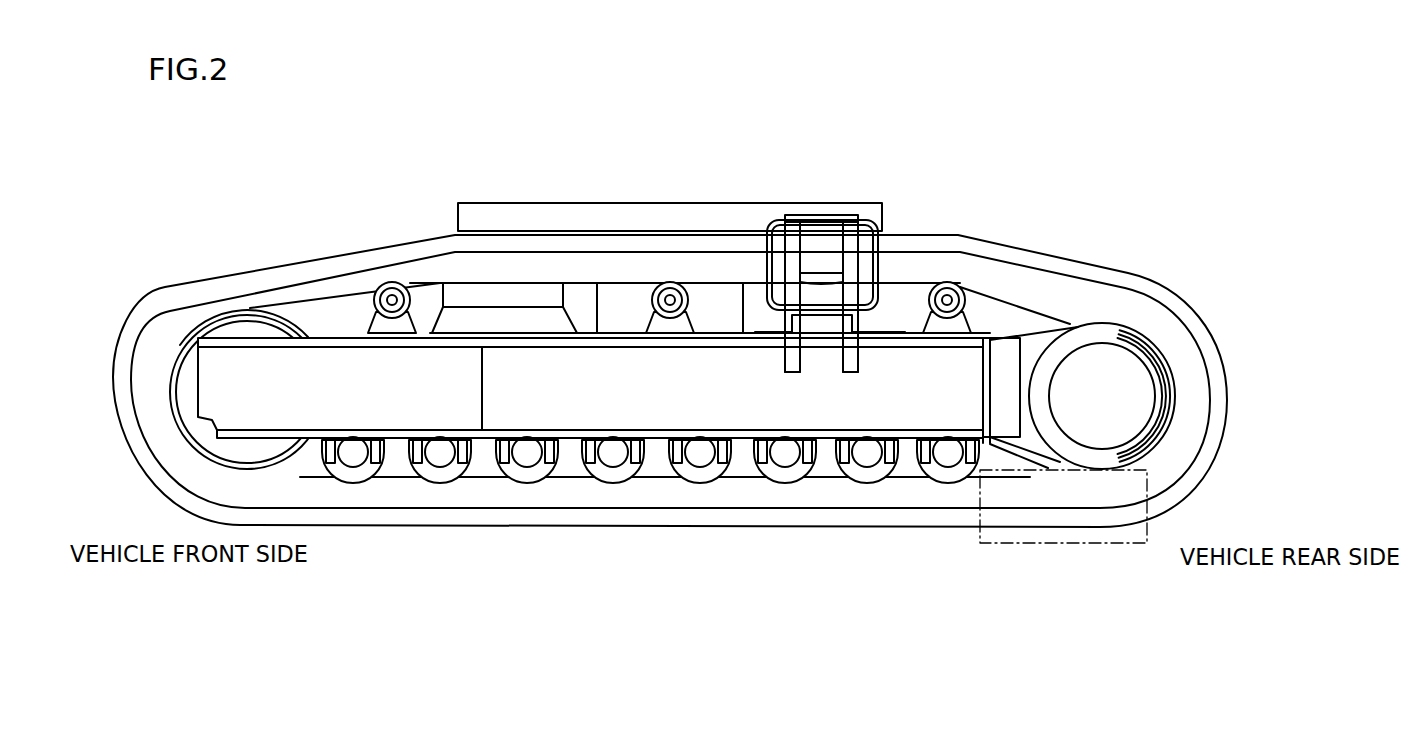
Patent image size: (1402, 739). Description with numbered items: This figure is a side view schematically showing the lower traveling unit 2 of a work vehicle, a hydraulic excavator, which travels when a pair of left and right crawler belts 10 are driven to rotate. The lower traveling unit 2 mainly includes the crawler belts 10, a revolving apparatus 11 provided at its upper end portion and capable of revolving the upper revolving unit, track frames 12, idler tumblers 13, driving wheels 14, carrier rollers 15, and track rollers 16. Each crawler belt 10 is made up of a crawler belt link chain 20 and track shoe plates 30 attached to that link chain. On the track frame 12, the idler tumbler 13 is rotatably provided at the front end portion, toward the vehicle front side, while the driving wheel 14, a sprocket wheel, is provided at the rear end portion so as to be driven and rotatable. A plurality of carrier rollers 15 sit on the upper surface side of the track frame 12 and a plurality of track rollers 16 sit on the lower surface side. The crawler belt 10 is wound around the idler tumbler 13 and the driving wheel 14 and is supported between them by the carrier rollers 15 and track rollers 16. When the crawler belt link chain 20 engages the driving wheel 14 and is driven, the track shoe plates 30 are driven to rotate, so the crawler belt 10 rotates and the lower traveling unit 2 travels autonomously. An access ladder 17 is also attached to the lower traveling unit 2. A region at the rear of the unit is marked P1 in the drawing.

The lower traveling unit 2 is at (670, 329).
The crawler belt 10 is at (670, 358).
The revolving apparatus 11 is at (511, 218).
The track frame 12 is at (570, 407).
The idler tumbler 13 is at (232, 336).
The driving wheel 14 is at (1072, 318).
The carrier roller 15 is at (393, 282).
The track roller 16 is at (702, 472).
The access ladder 17 is at (820, 262).
The crawler belt link chain 20 is at (670, 357).
The track shoe plate 30 is at (923, 245).
The position P1 is at (1066, 547).